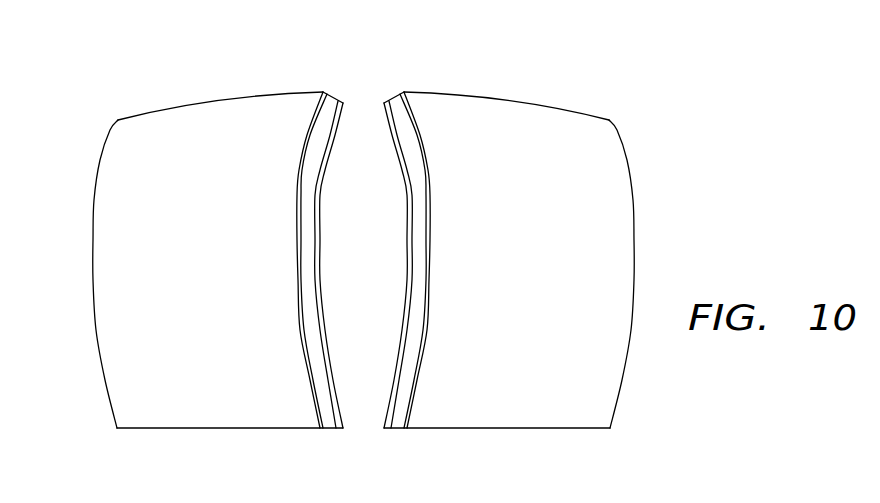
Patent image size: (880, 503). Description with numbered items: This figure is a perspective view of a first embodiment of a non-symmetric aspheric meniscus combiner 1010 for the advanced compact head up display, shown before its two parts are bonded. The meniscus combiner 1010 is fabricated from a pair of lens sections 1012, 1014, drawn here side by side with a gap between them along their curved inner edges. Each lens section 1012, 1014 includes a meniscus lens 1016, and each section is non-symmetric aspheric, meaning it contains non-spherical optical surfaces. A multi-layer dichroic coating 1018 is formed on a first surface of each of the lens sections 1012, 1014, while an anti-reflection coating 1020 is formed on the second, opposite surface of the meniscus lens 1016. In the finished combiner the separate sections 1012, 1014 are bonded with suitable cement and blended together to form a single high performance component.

The meniscus combiner 1010 is at (813, 483).
The lens section 1012 is at (91, 220).
The lens section 1014 is at (632, 182).
The meniscus lens 1016 is at (417, 297).
The multi-layer dichroic coating 1018 is at (410, 198).
The anti-reflection coating 1020 is at (205, 405).